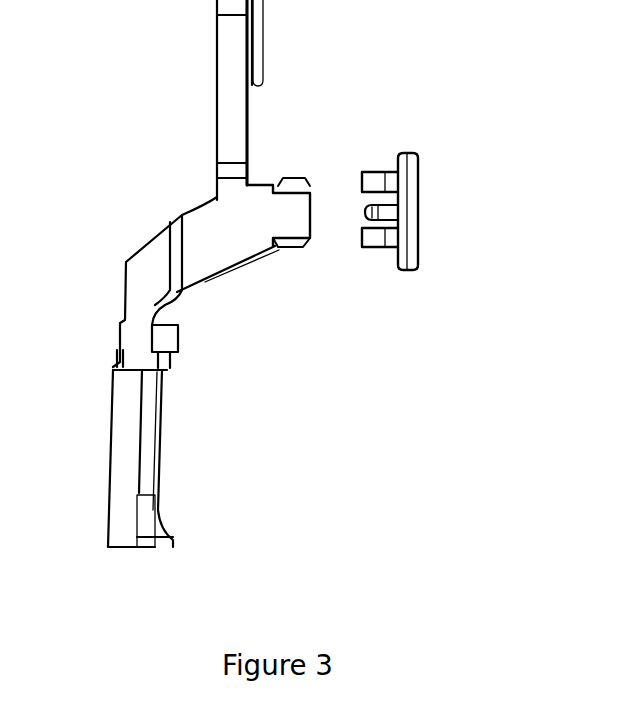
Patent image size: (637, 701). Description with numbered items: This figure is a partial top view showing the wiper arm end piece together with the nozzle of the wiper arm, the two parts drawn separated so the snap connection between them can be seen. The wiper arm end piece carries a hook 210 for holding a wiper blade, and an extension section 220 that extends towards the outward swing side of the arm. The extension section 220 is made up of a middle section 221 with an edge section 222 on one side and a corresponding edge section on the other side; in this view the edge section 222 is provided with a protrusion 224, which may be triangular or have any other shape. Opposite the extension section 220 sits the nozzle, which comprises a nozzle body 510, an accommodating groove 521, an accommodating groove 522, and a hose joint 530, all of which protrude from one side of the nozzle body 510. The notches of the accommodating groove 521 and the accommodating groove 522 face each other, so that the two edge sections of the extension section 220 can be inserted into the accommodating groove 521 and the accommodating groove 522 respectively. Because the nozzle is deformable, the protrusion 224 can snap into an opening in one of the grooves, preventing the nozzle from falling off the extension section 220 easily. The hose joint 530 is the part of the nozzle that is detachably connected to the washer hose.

The hook 210 is at (263, 43).
The extension section 220 is at (280, 210).
The middle section 221 is at (313, 212).
The edge section 222 is at (307, 185).
The protrusion 224 is at (273, 243).
The nozzle body 510 is at (418, 205).
The accommodating groove 521 is at (377, 183).
The accommodating groove 522 is at (378, 242).
The hose joint 530 is at (418, 216).